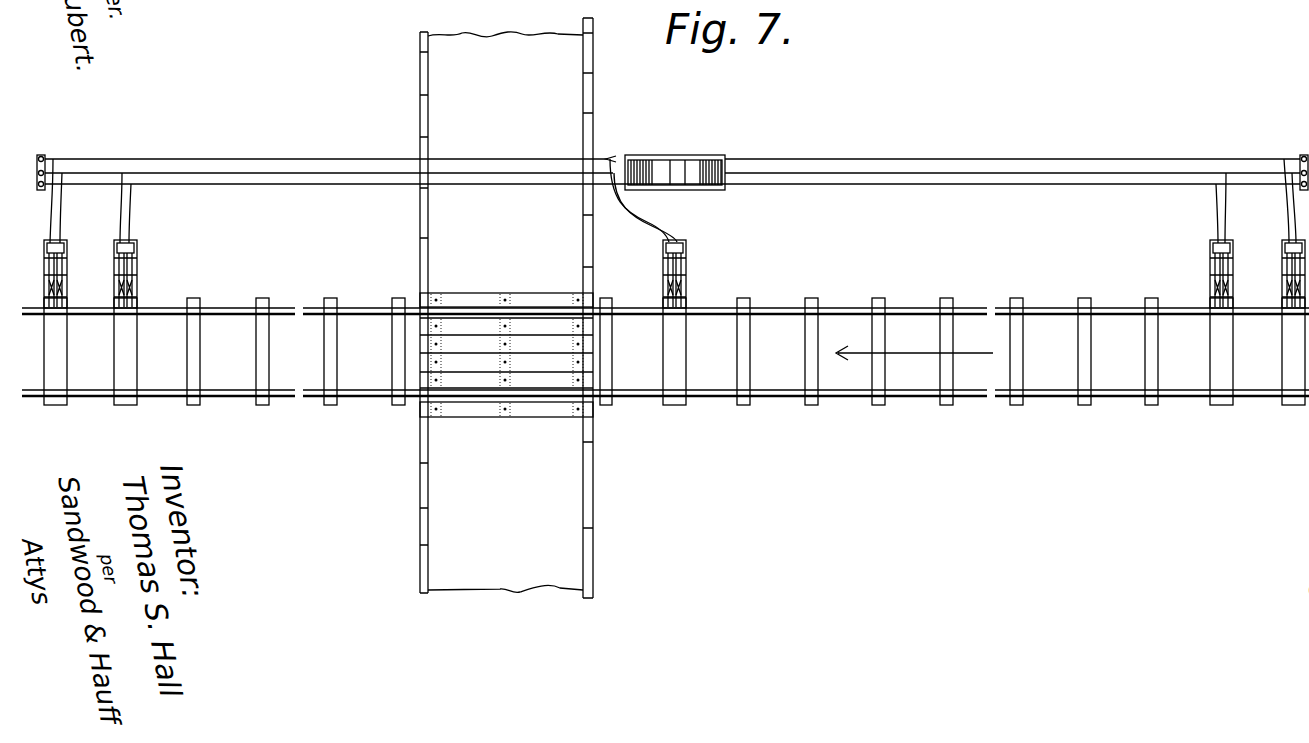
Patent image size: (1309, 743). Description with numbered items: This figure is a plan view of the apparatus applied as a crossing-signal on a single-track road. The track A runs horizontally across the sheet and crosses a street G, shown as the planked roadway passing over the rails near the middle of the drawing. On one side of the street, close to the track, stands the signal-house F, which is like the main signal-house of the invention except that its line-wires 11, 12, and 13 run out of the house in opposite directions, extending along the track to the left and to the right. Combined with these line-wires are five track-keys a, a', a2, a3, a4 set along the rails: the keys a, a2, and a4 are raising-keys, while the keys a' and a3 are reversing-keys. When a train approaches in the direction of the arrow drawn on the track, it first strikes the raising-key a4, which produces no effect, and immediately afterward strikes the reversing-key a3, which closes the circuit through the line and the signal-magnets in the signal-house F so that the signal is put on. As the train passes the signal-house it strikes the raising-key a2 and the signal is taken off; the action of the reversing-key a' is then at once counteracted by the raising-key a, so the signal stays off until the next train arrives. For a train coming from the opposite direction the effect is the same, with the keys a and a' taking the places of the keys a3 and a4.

The track A is at (665, 351).
The street G is at (506, 308).
The signal-house F is at (672, 166).
The line-wire 11 is at (672, 184).
The line-wire 12 is at (672, 203).
The line-wire 13 is at (672, 196).
The track-key a is at (62, 282).
The track-key a' is at (134, 289).
The track-key a2 is at (684, 322).
The track-key a3 is at (1208, 289).
The track-key a4 is at (1295, 282).